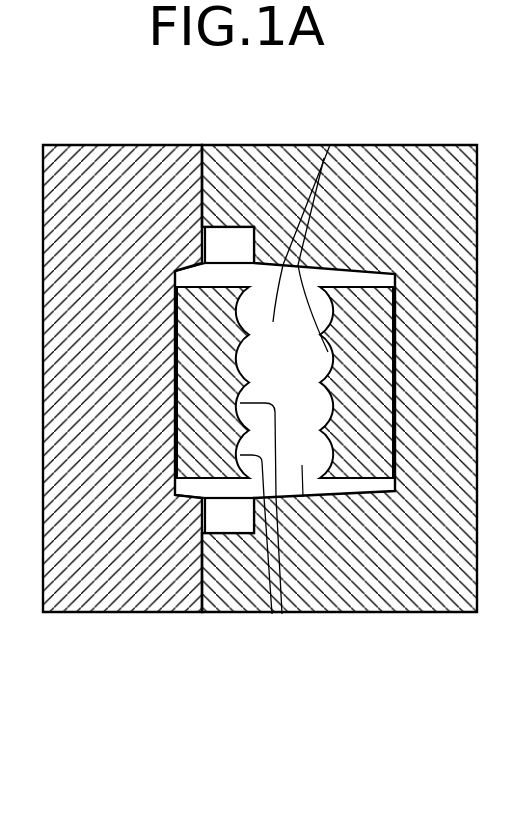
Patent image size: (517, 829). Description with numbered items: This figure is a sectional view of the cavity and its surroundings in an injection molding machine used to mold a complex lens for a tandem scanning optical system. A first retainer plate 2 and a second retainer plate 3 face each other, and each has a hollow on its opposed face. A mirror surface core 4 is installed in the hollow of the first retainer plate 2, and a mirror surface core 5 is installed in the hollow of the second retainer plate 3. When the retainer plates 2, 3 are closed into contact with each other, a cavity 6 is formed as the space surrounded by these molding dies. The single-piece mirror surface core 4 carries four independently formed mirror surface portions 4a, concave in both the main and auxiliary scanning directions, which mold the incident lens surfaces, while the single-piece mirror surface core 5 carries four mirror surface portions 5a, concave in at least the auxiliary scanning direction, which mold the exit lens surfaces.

The first retainer plate 2 is at (107, 615).
The second retainer plate 3 is at (422, 614).
The mirror surface core 4 is at (216, 536).
The mirror surface portions 4a is at (282, 616).
The mirror surface core 5 is at (358, 480).
The mirror surface portions 5a is at (332, 140).
The cavity 6 is at (303, 497).